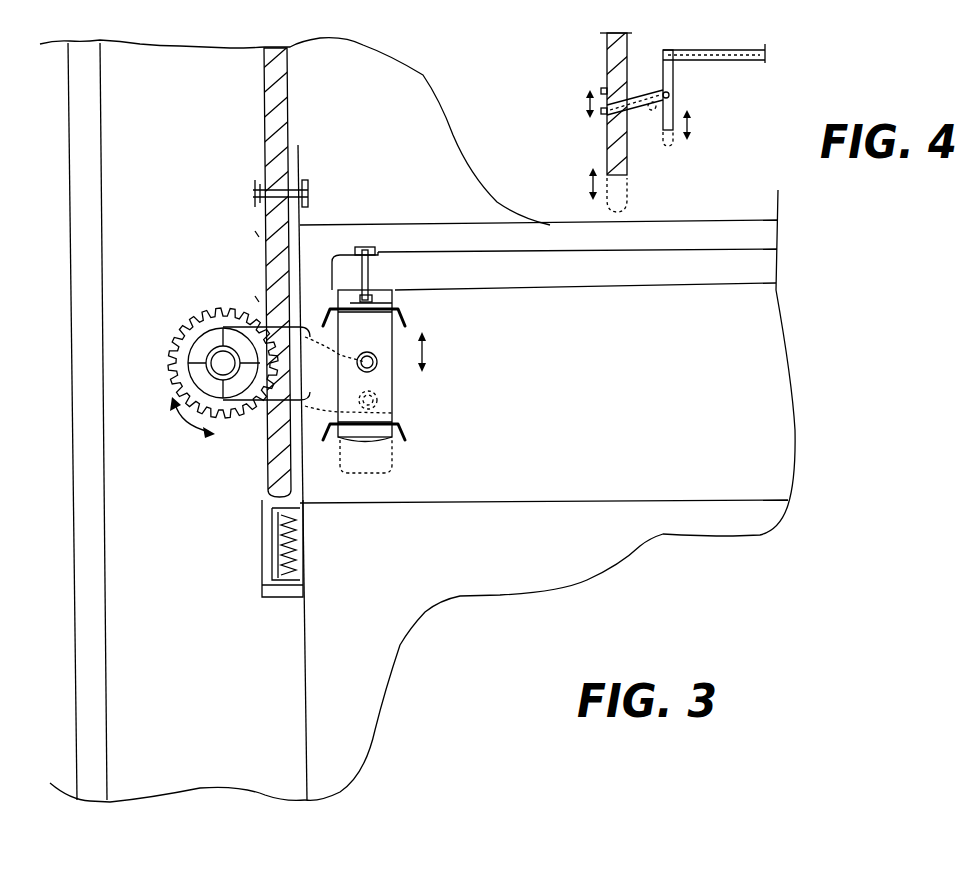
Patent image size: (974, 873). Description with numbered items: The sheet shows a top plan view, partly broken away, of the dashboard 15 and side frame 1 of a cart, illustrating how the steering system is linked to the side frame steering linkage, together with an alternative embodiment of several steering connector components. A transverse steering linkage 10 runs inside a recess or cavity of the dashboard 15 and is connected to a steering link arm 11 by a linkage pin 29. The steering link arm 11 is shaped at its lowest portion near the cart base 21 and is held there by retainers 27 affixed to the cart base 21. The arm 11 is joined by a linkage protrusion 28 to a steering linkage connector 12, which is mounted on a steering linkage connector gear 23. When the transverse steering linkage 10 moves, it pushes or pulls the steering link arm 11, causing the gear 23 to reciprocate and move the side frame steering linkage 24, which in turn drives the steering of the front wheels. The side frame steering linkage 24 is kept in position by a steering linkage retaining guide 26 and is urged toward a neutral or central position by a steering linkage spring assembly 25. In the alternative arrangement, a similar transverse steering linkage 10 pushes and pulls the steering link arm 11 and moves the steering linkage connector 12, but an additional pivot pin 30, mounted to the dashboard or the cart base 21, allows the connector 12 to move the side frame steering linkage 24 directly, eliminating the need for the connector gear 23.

In FIG. 3, the housing wall 1 is at (166, 134).
In FIG. 3, the transverse steering linkage 10 is at (575, 278).
In FIG. 4, the transverse steering linkage 10 is at (740, 62).
In FIG. 3, the steering link arm 11 is at (385, 330).
In FIG. 4, the steering link arm 11 is at (675, 75).
In FIG. 3, the steering linkage connector 12 is at (380, 400).
In FIG. 4, the steering linkage connector 12 is at (650, 110).
In FIG. 3, the dashboard 15 is at (690, 444).
In FIG. 3, the cart base 21 is at (320, 583).
In FIG. 3, the steering linkage connector gear 23 is at (215, 310).
In FIG. 3, the side frame steering linkage 24 is at (265, 108).
In FIG. 4, the side frame steering linkage 24 is at (606, 62).
In FIG. 3, the steering linkage spring assembly 25 is at (275, 545).
In FIG. 3, the steering linkage retaining guide 26 is at (268, 185).
In FIG. 3, the retainer 27 is at (333, 303).
In FIG. 3, the linkage protrusion 28 is at (377, 362).
In FIG. 4, the linkage protrusion 28 is at (658, 90).
In FIG. 3, the linkage pin 29 is at (372, 272).
In FIG. 4, the pivot pin 30 is at (635, 95).